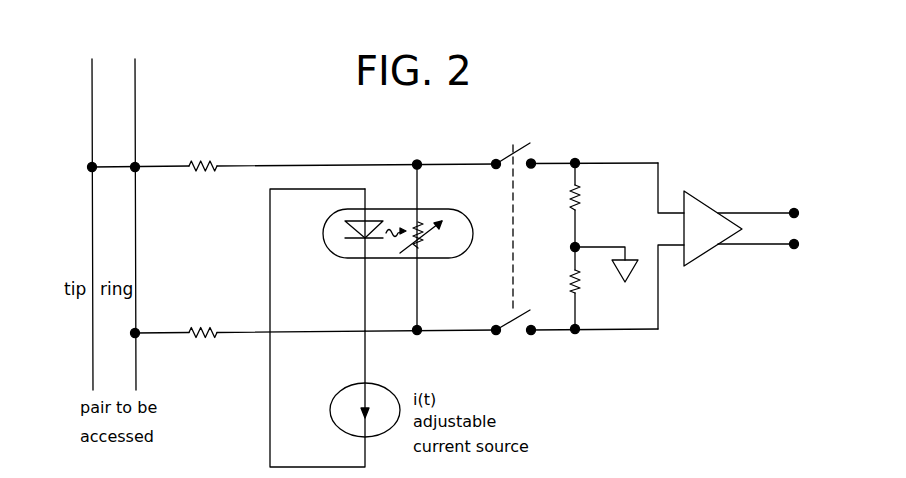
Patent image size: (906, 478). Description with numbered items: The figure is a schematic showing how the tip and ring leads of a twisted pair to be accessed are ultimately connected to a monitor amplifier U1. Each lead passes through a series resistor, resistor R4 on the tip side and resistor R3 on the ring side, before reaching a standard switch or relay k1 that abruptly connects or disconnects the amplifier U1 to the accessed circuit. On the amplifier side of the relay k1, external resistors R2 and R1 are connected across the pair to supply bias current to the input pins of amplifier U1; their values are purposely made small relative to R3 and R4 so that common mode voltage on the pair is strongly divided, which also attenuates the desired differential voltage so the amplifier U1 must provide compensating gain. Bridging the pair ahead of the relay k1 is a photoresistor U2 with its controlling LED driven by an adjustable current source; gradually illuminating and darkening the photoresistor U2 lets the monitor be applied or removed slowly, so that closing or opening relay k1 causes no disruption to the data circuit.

The resistor R4 is at (206, 149).
The resistor R3 is at (206, 315).
The resistor R2 is at (592, 205).
The resistor R1 is at (592, 288).
The relay k1 is at (514, 261).
The amplifier U1 is at (712, 204).
The photoresistor U2 is at (387, 256).